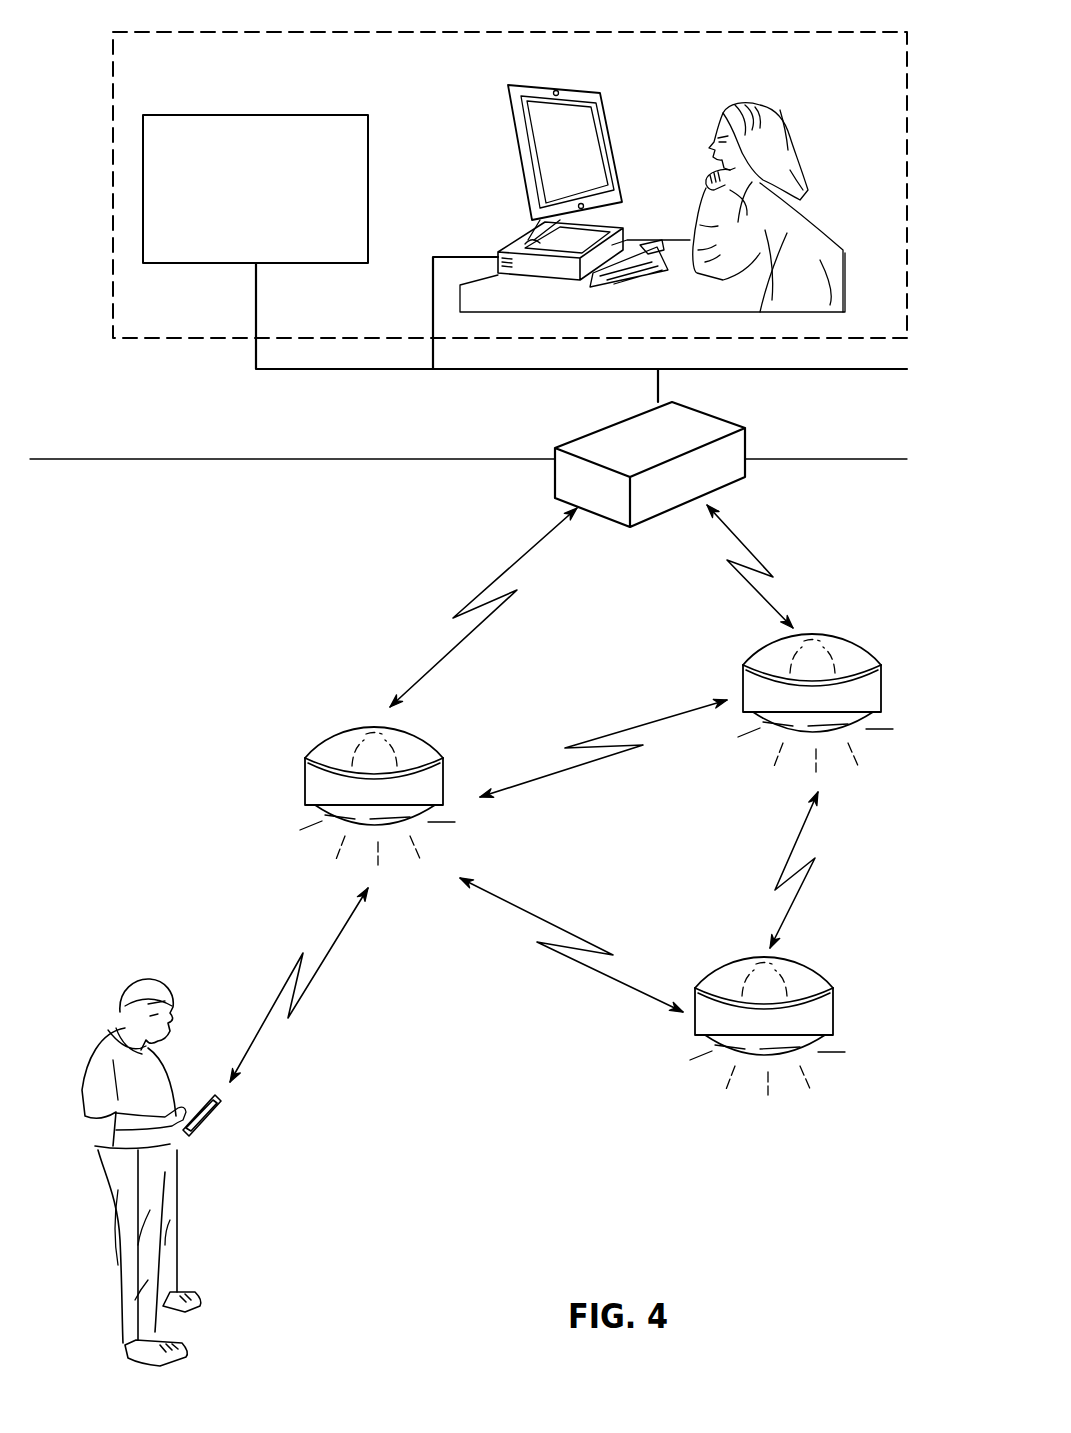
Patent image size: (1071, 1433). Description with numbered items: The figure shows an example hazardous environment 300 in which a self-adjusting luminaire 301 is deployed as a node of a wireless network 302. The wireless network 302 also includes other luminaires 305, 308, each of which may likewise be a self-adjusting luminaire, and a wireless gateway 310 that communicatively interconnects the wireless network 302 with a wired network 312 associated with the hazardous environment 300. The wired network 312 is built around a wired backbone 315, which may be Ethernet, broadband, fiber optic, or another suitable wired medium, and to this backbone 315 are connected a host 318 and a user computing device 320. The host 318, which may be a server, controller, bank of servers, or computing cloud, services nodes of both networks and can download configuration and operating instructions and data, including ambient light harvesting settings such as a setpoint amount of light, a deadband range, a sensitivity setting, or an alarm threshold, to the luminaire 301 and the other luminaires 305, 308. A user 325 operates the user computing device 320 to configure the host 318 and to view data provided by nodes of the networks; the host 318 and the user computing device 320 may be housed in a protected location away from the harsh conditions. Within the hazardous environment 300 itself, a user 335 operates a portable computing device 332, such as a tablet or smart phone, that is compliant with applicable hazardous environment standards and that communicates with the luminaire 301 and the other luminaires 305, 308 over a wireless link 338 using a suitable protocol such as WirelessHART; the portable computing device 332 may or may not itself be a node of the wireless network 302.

The hazardous environment 300 is at (222, 21).
The wireless network 302 is at (122, 506).
The wired network 312 is at (122, 415).
The wired backbone 315 is at (336, 371).
The host 318 is at (328, 114).
The user computing device 320 is at (577, 92).
The user 325 is at (785, 120).
The wireless gateway 310 is at (747, 432).
The self-adjusting luminaire 301 is at (447, 771).
The luminaire 308 is at (885, 678).
The luminaire 305 is at (836, 1008).
The wireless link 338 is at (310, 989).
The user 335 is at (142, 978).
The portable computing device 332 is at (217, 1131).